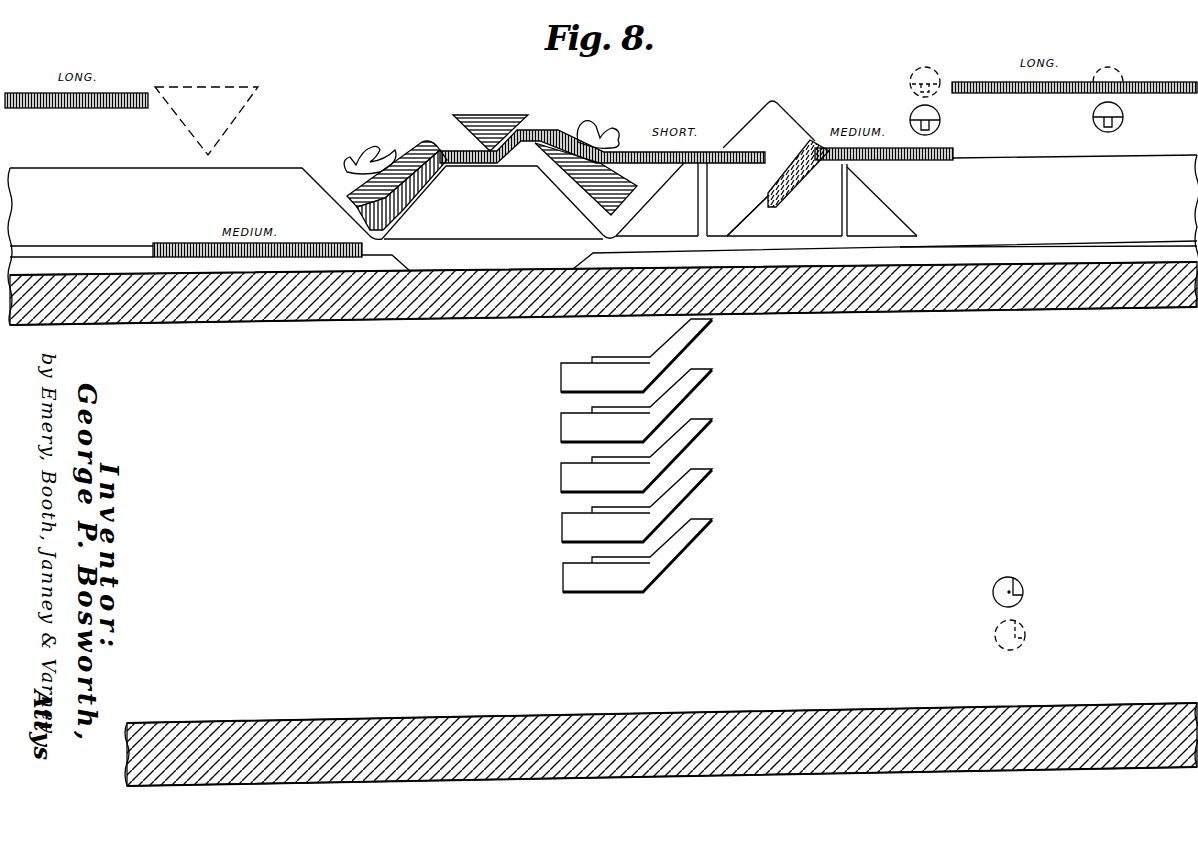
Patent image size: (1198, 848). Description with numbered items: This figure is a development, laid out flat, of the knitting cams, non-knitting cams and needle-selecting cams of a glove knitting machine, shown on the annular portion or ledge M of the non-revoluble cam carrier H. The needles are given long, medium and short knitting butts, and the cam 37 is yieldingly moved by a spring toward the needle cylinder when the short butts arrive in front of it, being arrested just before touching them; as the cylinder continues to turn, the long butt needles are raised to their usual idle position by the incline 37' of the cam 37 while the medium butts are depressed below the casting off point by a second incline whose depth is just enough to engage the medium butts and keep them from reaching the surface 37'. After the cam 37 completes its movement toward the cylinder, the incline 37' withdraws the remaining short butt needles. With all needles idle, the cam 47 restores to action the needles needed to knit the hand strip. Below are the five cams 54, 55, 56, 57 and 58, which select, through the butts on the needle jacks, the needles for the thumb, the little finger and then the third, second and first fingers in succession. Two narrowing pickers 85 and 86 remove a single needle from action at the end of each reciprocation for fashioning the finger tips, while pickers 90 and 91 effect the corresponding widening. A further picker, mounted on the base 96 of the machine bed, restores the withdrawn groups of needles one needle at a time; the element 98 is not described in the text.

The annular portion or ledge of the cam carrier M is at (90, 180).
The cam carrier H is at (128, 313).
The cam 47 is at (227, 97).
The narrowing picker 86 is at (370, 157).
The narrowing picker 85 is at (600, 135).
The cam 37 is at (771, 112).
The incline of the cam 37' is at (808, 155).
The picker 91 is at (940, 118).
The picker 90 is at (1120, 114).
The circular notched disc 98 is at (1015, 589).
The cam 58 is at (683, 332).
The cam 57 is at (687, 378).
The cam 56 is at (687, 423).
The cam 55 is at (692, 474).
The cam 54 is at (693, 527).
The base of the knitting machine bed 96 is at (798, 722).